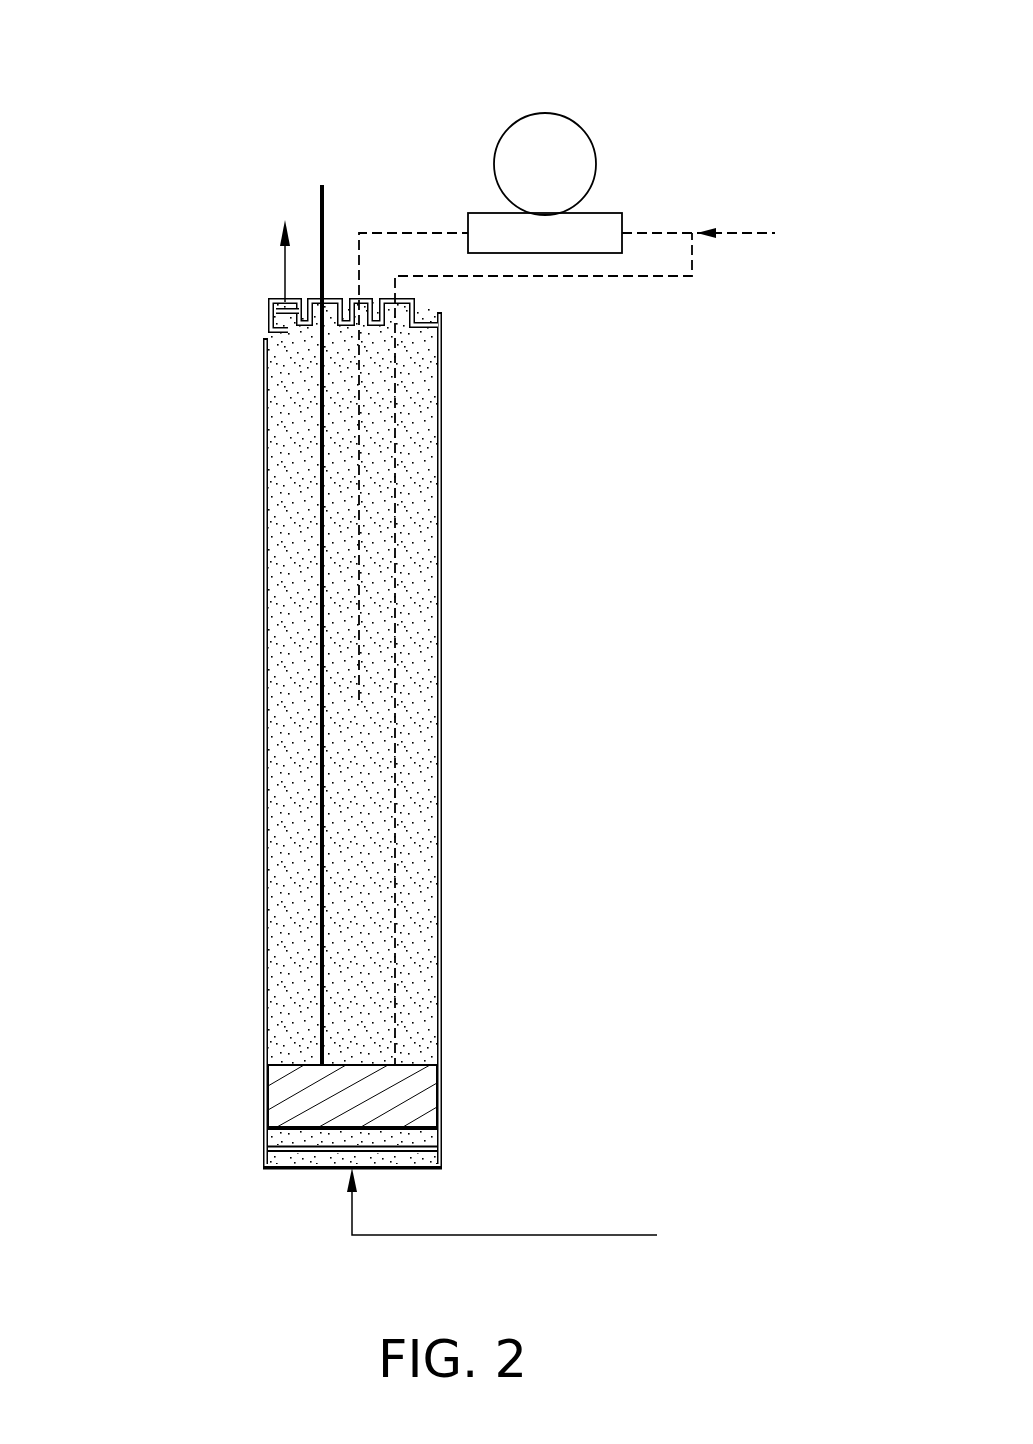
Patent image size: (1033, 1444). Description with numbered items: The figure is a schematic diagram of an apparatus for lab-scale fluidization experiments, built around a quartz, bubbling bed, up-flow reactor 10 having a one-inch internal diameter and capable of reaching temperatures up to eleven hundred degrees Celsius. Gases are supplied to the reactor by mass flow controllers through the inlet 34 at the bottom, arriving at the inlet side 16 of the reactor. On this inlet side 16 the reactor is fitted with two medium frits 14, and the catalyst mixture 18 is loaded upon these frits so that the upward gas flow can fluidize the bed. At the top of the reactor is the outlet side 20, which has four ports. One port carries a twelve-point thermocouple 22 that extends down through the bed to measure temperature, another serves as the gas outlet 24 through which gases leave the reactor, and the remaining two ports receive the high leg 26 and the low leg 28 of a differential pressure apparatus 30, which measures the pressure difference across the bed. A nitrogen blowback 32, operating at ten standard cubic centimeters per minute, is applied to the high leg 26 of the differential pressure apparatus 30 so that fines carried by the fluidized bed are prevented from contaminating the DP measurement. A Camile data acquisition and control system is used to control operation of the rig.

The reactor 10 is at (221, 94).
The medium frits 14 is at (270, 1137).
The inlet side 16 is at (500, 1170).
The catalyst mixture 18 is at (428, 1085).
The outlet side 20 is at (236, 330).
The 12-point thermocouple 22 is at (320, 202).
The gas outlet 24 is at (285, 268).
The high leg 26 is at (360, 382).
The low leg 28 is at (396, 440).
The differential pressure apparatus 30 is at (573, 120).
The nitrogen blowback 32 is at (757, 232).
The inlet 34 is at (513, 1236).